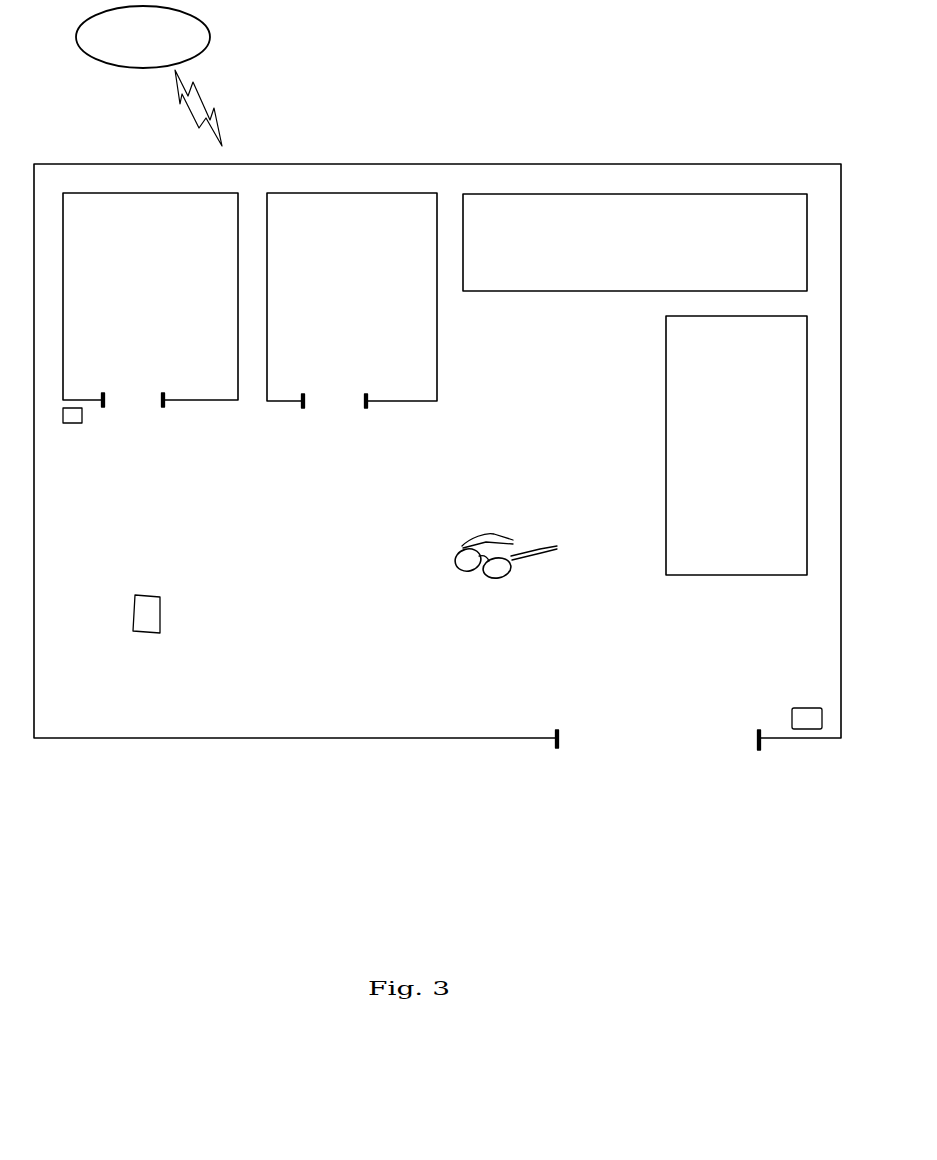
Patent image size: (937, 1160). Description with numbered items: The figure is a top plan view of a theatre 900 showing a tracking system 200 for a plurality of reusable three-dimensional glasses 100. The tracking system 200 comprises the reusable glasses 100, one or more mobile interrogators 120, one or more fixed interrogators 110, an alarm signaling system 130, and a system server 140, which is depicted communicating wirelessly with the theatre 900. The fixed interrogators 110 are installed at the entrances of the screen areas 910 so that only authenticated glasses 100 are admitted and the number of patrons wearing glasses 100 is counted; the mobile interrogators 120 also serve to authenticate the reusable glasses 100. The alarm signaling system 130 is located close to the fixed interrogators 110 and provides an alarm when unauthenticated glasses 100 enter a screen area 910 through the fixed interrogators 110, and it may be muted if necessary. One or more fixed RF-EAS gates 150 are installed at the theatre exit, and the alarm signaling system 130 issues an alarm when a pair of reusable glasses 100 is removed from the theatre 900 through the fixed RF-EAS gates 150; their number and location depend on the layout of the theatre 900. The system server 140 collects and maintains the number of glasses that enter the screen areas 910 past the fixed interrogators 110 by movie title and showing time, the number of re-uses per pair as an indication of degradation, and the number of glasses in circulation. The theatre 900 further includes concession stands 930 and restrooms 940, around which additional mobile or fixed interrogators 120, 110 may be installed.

The reusable 3D glasses 100 is at (458, 566).
The fixed interrogators 110 is at (103, 408).
The mobile interrogators 120 is at (133, 632).
The alarm signaling system 130 is at (63, 425).
The system server 140 is at (211, 30).
The fixed RF-EAS gates 150 is at (612, 740).
The tracking system 200 is at (756, 53).
The theatre 900 is at (115, 740).
The screen areas 910 is at (90, 210).
The concession stands 930 is at (720, 565).
The restrooms 940 is at (544, 280).